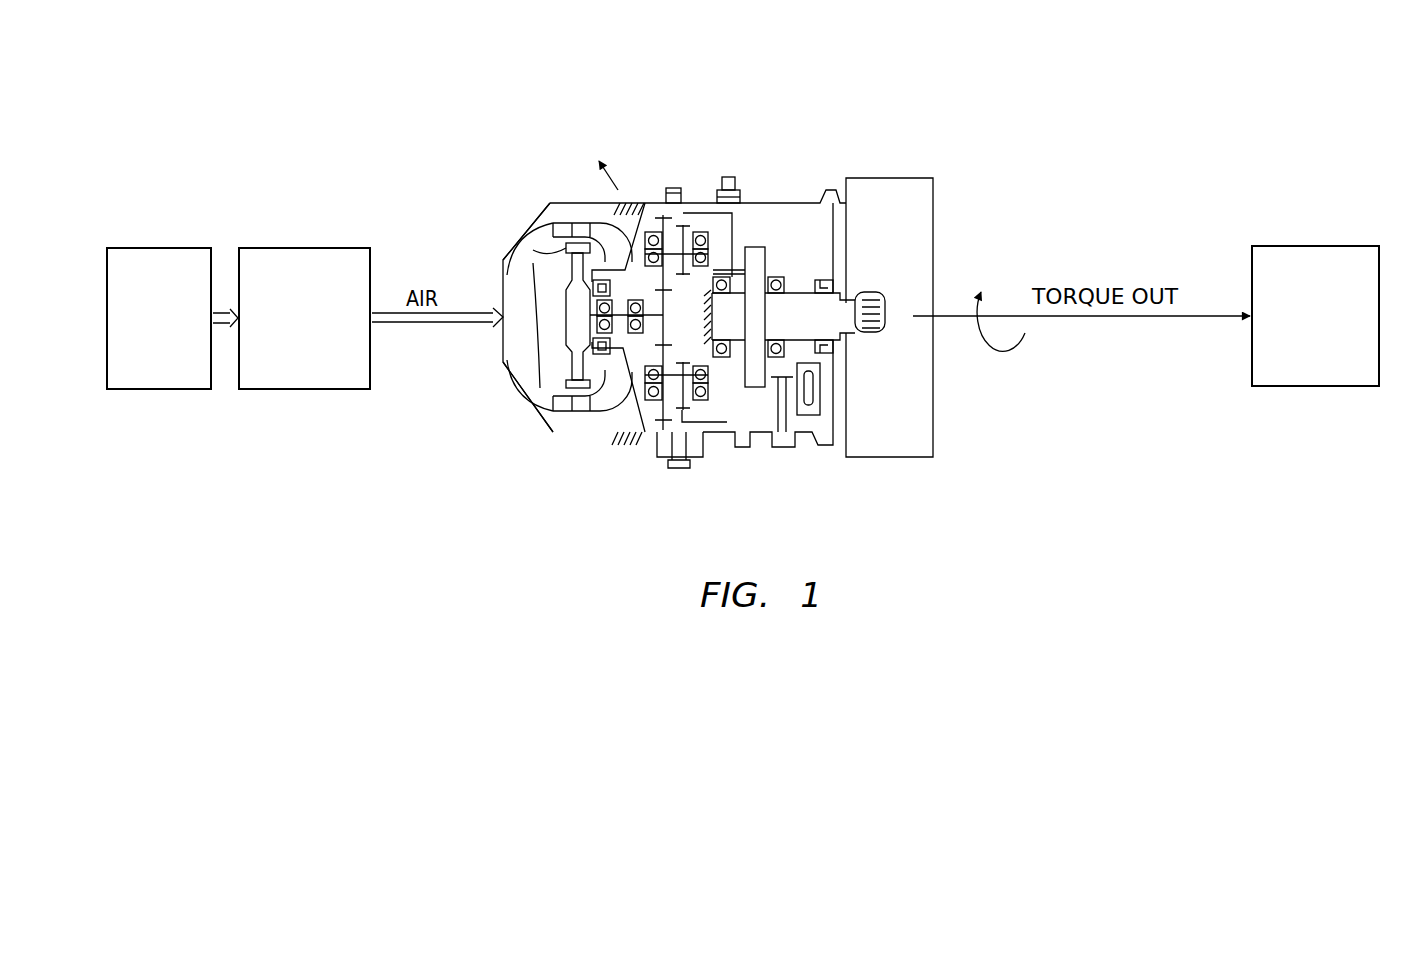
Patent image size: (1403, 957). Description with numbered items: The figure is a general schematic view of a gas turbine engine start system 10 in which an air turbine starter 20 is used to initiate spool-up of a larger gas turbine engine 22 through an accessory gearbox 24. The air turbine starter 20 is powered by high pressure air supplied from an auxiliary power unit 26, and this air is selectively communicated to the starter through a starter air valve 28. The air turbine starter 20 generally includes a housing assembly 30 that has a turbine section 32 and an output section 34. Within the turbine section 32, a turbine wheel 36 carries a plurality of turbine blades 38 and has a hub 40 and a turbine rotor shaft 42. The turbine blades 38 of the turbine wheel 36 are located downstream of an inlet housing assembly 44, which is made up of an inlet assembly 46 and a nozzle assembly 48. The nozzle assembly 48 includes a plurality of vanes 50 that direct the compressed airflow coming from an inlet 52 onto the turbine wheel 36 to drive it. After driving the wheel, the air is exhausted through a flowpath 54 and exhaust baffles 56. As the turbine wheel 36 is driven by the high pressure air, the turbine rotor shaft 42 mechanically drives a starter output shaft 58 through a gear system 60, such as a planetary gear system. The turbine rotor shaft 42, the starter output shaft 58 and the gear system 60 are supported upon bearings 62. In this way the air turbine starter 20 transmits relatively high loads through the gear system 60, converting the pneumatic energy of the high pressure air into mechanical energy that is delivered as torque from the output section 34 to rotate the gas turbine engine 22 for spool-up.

The gas turbine engine start system 10 is at (1012, 78).
The air turbine starter 20 is at (523, 178).
The gas turbine engine 22 is at (1318, 246).
The accessory gearbox 24 is at (911, 458).
The auxiliary power unit 26 is at (162, 248).
The starter air valve 28 is at (300, 248).
The housing assembly 30 is at (653, 454).
The turbine section 32 is at (578, 143).
The output section 34 is at (791, 184).
The turbine wheel 36 is at (567, 337).
The turbine blades 38 is at (600, 386).
The hub 40 is at (547, 261).
The turbine rotor shaft 42 is at (618, 311).
The inlet housing assembly 44 is at (531, 226).
The inlet assembly 46 is at (545, 203).
The nozzle assembly 48 is at (519, 367).
The vanes 50 is at (551, 394).
The inlet 52 is at (518, 290).
The flowpath 54 is at (587, 203).
The exhaust baffles 56 is at (628, 447).
The starter output shaft 58 is at (858, 298).
The gear system 60 is at (694, 432).
The bearings 62 is at (645, 232).